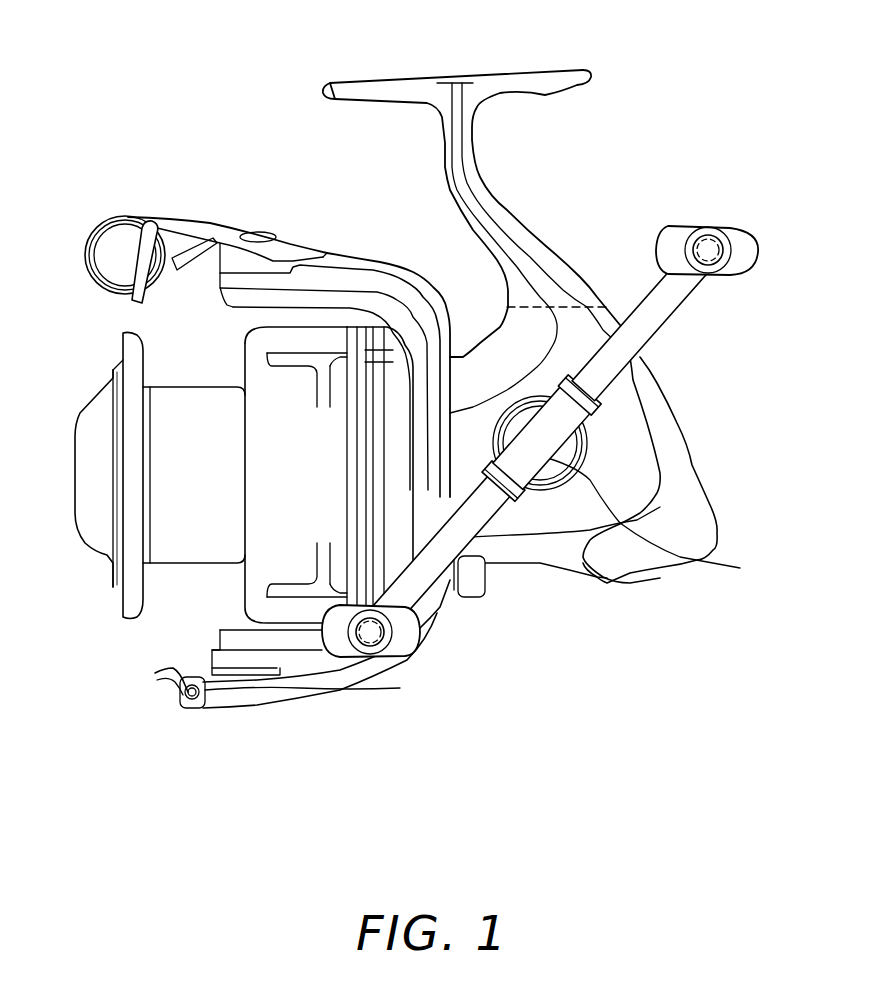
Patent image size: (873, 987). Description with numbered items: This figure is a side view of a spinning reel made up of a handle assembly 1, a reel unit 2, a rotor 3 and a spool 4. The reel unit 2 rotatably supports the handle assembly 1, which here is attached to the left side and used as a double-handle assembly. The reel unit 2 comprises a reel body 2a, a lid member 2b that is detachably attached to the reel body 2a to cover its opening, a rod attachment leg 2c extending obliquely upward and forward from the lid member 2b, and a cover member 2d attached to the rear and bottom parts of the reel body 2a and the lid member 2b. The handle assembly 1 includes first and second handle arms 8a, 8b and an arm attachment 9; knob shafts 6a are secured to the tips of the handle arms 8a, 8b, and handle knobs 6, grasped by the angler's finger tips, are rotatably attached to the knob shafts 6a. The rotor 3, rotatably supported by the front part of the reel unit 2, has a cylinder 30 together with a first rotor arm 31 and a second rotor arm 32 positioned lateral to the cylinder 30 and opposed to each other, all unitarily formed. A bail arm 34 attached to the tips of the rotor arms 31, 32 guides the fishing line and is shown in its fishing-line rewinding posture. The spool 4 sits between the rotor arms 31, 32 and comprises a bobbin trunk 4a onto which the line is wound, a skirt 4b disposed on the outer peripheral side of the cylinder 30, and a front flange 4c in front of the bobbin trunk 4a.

The handle assembly 1 is at (566, 428).
The reel unit 2 is at (546, 299).
The reel body 2a is at (530, 303).
The lid member 2b is at (608, 417).
The rod attachment leg 2c is at (500, 80).
The cover member 2d is at (660, 430).
The rotor 3 is at (260, 447).
The spool 4 is at (221, 450).
The bobbin trunk 4a is at (198, 393).
The skirt 4b is at (337, 320).
The front flange 4c is at (133, 360).
The handle knob 6 is at (707, 217).
The knob shaft 6a is at (713, 230).
The first handle arm 8a is at (667, 293).
The second handle arm 8b is at (439, 554).
The arm attachment 9 is at (653, 520).
The cylinder 30 is at (290, 352).
The first rotor arm 31 is at (337, 293).
The second rotor arm 32 is at (267, 650).
The bail arm 34 is at (145, 217).